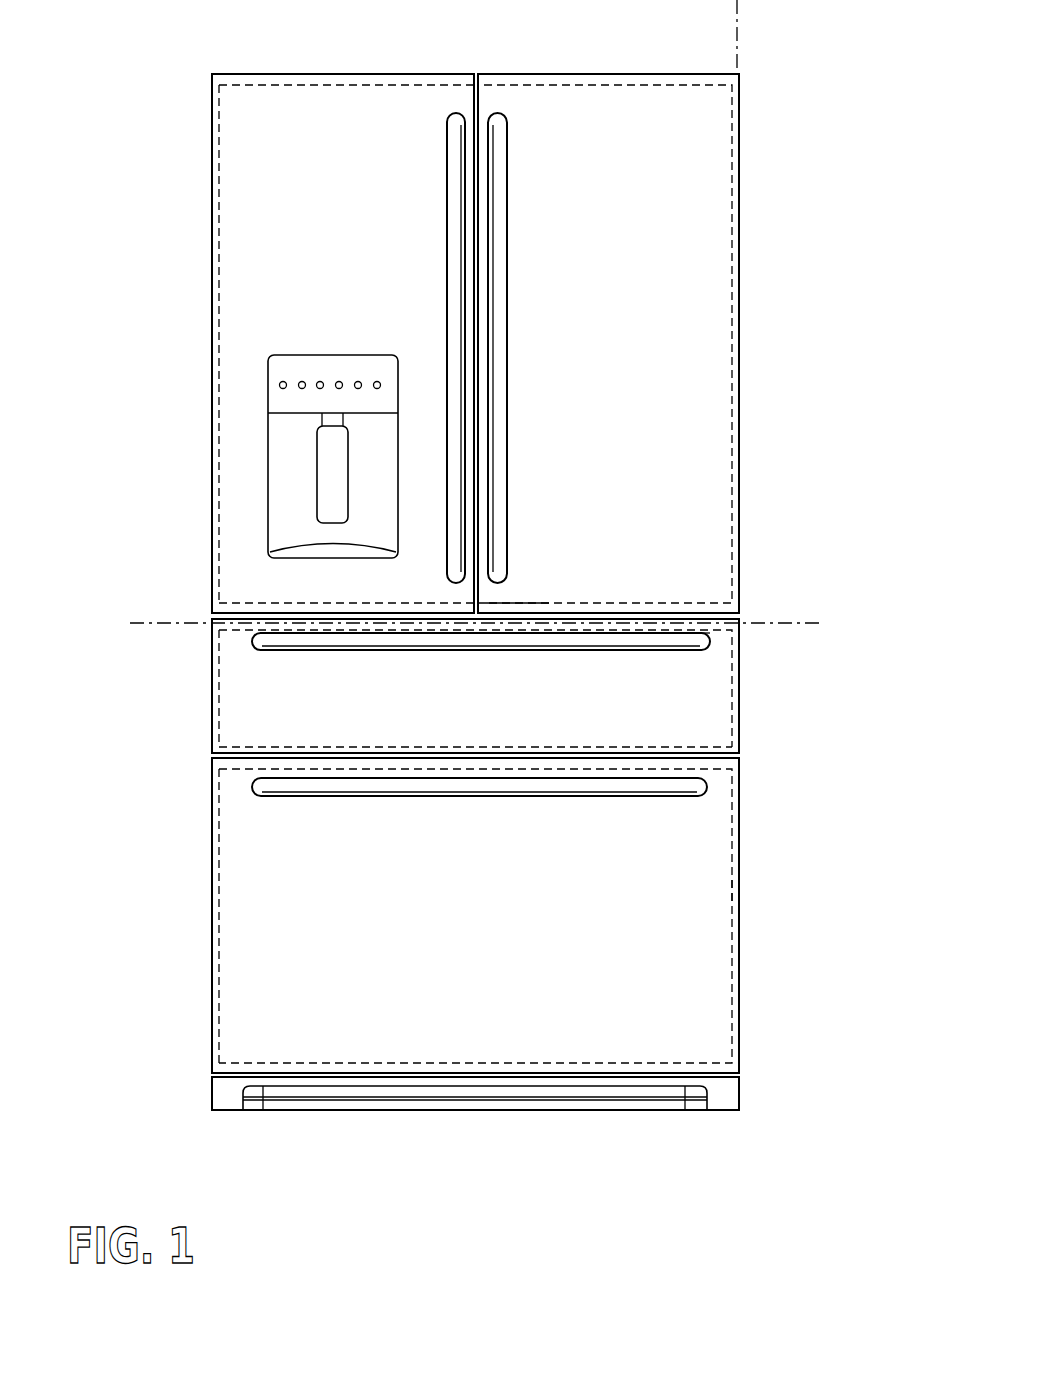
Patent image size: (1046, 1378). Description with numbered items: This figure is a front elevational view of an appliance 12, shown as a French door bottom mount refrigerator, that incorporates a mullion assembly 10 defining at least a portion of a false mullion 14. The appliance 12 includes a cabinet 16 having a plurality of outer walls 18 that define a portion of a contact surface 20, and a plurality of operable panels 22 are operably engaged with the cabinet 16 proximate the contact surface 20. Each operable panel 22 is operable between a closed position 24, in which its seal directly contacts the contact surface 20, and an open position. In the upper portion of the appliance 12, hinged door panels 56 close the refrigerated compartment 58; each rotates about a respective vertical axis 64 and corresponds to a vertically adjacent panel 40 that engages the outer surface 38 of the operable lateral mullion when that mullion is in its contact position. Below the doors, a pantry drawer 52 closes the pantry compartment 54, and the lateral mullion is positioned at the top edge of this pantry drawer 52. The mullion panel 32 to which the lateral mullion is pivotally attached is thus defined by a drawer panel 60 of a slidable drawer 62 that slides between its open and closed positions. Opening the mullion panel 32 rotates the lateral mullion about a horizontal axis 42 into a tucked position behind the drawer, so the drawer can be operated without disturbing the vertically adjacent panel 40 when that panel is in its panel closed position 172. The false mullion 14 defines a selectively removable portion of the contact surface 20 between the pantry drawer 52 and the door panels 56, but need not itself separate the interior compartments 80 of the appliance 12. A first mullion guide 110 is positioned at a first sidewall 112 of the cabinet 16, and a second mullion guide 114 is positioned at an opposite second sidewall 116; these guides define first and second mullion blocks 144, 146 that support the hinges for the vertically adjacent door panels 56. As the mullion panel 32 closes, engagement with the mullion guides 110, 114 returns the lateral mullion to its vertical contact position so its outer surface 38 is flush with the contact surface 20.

The mullion assembly 10 is at (680, 595).
The appliance 12 is at (498, 68).
The false mullion 14 is at (277, 600).
The cabinet 16 is at (725, 1088).
The outer walls 18 is at (740, 213).
The contact surface 20 is at (740, 332).
The operable panels 22 is at (262, 214).
The closed position 24 is at (202, 700).
The mullion panel 32 is at (243, 715).
The outer surface 38 is at (550, 608).
The vertically adjacent panel 40 is at (680, 413).
The horizontal axis 42 is at (778, 623).
The pantry drawer 52 is at (673, 725).
The pantry compartment 54 is at (312, 713).
The hinged door panels 56 is at (277, 128).
The refrigerated compartment 58 is at (293, 295).
The drawer panel 60 is at (680, 962).
The slidable drawer 62 is at (207, 945).
The vertical axis 64 is at (737, 47).
The interior compartments 80 is at (343, 982).
The first mullion guide 110 is at (738, 643).
The first sidewall 112 is at (732, 893).
The second mullion guide 114 is at (253, 605).
The second sidewall 116 is at (217, 892).
The first mullion block 144 is at (710, 642).
The second mullion block 146 is at (217, 625).
The panel closed position 172 is at (207, 386).